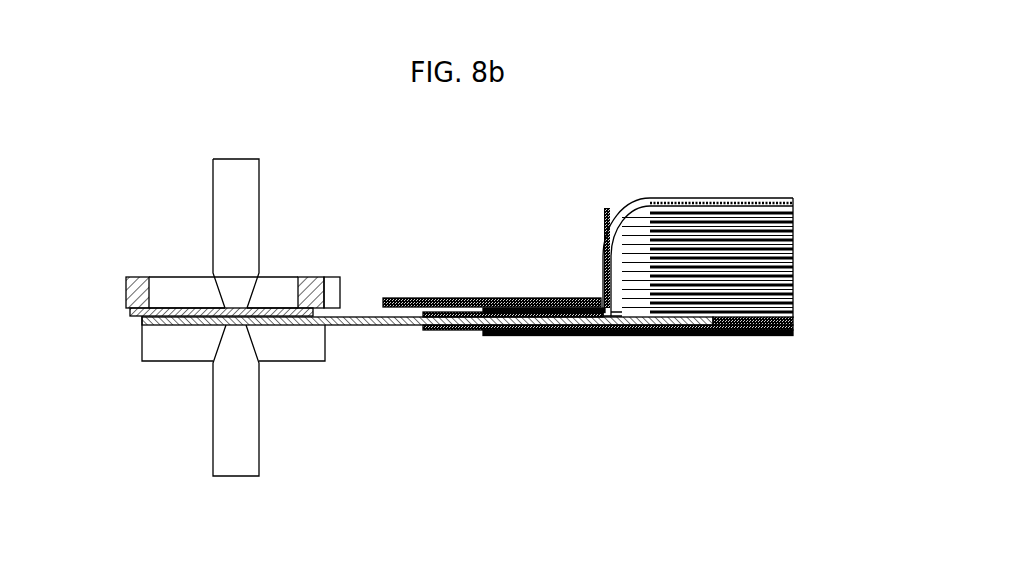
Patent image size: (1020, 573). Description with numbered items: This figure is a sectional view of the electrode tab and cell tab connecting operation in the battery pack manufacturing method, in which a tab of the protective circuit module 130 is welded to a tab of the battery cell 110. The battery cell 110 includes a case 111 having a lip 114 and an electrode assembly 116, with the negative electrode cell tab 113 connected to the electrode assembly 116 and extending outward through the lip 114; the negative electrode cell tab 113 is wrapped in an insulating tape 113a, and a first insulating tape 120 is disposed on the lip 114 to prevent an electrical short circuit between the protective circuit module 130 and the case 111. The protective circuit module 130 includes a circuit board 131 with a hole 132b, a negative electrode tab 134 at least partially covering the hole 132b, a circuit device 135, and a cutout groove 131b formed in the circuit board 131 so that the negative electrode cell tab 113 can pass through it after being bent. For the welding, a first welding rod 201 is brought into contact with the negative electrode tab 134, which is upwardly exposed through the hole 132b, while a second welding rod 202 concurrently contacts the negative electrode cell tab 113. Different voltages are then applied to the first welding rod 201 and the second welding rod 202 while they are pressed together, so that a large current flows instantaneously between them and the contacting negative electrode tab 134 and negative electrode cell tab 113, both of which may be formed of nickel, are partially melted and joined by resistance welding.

The battery cell 110 is at (740, 223).
The case 111 is at (745, 187).
The electrode assembly 116 is at (805, 220).
The negative electrode cell tab 113 is at (363, 327).
The insulating tape 113a is at (434, 327).
The lip 114 is at (577, 350).
The first insulating tape 120 is at (455, 298).
The protective circuit module 130 is at (216, 296).
The circuit board 131 is at (142, 278).
The cutout groove 131b is at (332, 278).
The hole 132b is at (289, 280).
The negative electrode tab 134 is at (127, 312).
The circuit device 135 is at (147, 352).
The first welding rod 201 is at (236, 165).
The second welding rod 202 is at (236, 470).